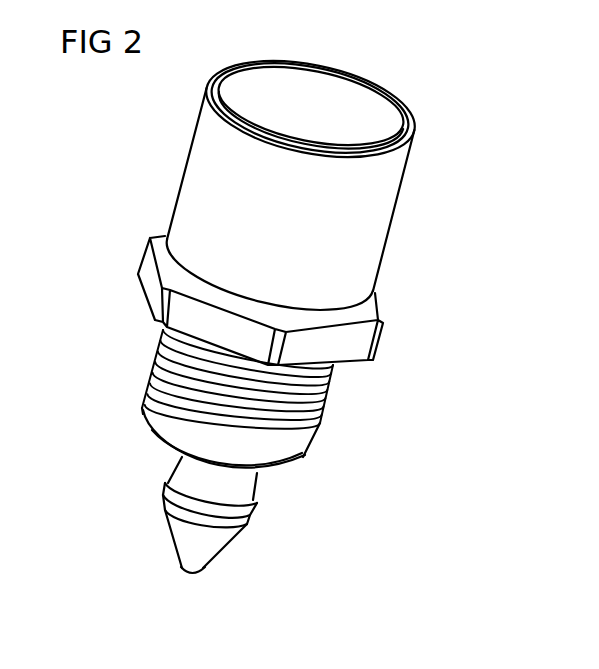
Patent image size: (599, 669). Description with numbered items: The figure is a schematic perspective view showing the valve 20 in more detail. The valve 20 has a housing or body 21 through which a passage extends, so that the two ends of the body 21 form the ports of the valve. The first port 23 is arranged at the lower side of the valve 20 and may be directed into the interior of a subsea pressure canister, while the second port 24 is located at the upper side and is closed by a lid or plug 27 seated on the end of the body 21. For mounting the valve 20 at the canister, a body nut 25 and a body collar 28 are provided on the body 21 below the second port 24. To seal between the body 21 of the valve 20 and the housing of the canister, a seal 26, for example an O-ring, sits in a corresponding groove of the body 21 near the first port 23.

The valve 20 is at (323, 332).
The housing or body 21 is at (386, 243).
The first port 23 is at (192, 573).
The second port 24 is at (393, 102).
The body nut 25 is at (330, 390).
The seal 26 is at (254, 508).
The lid or plug 27 is at (315, 80).
The body collar 28 is at (308, 447).